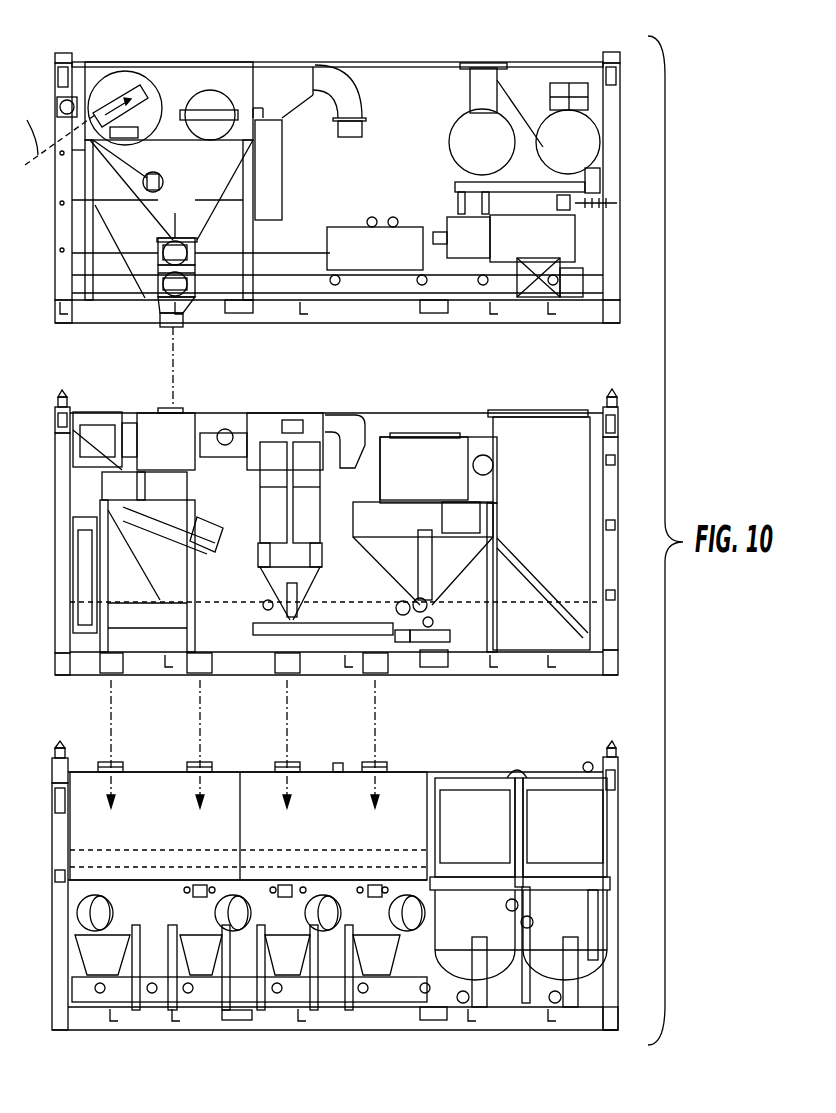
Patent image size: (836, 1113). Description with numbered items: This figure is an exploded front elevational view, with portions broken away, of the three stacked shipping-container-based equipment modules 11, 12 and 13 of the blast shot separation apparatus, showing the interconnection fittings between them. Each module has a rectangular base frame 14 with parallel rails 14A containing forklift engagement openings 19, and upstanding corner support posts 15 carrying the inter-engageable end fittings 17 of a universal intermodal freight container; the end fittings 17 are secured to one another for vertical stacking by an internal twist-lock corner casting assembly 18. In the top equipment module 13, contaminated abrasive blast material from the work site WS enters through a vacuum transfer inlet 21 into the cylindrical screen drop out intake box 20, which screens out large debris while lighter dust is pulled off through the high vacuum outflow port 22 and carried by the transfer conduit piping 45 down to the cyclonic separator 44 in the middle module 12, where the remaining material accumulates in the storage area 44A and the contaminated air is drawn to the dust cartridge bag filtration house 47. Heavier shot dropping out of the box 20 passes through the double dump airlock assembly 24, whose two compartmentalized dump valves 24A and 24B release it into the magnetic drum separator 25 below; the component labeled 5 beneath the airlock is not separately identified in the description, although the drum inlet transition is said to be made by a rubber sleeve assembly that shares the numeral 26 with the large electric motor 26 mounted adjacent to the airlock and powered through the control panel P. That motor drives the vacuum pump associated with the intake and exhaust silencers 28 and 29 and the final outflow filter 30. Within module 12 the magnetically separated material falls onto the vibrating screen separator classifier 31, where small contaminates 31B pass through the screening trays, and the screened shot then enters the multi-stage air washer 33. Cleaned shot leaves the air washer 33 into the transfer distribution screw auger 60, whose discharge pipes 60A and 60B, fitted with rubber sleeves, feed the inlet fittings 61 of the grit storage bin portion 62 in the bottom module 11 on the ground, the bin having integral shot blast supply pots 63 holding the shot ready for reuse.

The equipment module 11 is at (570, 742).
The second equipment module 12 is at (592, 378).
The top equipment module 13 is at (632, 97).
The rectangular base frame 14 is at (577, 322).
The parallel rail 14A is at (520, 312).
The support post 15 is at (613, 510).
The end fitting 17 is at (620, 412).
The twist-lock corner casting assembly 18 is at (625, 402).
The forklift engagement opening 19 is at (430, 313).
The cylindrical screen drop out intake box 20 is at (200, 78).
The vacuum transfer inlet 21 is at (152, 78).
The high vacuum outflow port 22 is at (283, 75).
The double dump airlock assembly 24 is at (150, 270).
The dump valve 24A is at (155, 255).
The dump valve 24B is at (183, 295).
The discharge outlet 5 is at (165, 318).
The magnetic drum separator 25 is at (180, 430).
The large electric motor 26 is at (391, 258).
The intake silencer 28 is at (470, 133).
The exhaust silencer 29 is at (588, 157).
The final outflow filter 30 is at (560, 240).
The control panel P is at (283, 184).
The work site WS is at (55, 130).
The vibrating screen separator classifier 31 is at (122, 513).
The small contaminates 31B is at (228, 548).
The multi-stage air washer 33 is at (83, 573).
The cyclonic separator 44 is at (435, 457).
The storage area 44A is at (452, 555).
The transfer conduit piping 45 is at (350, 102).
The dust cartridge bag filtration house 47 is at (560, 500).
The transfer distribution screw auger 60 is at (284, 673).
The auger discharge pipe 60A is at (105, 673).
The auger discharge pipe 60B is at (196, 673).
The inlet fitting 61 is at (115, 762).
The grit storage bin portion 62 is at (398, 778).
The shot blast supply pot 63 is at (82, 888).